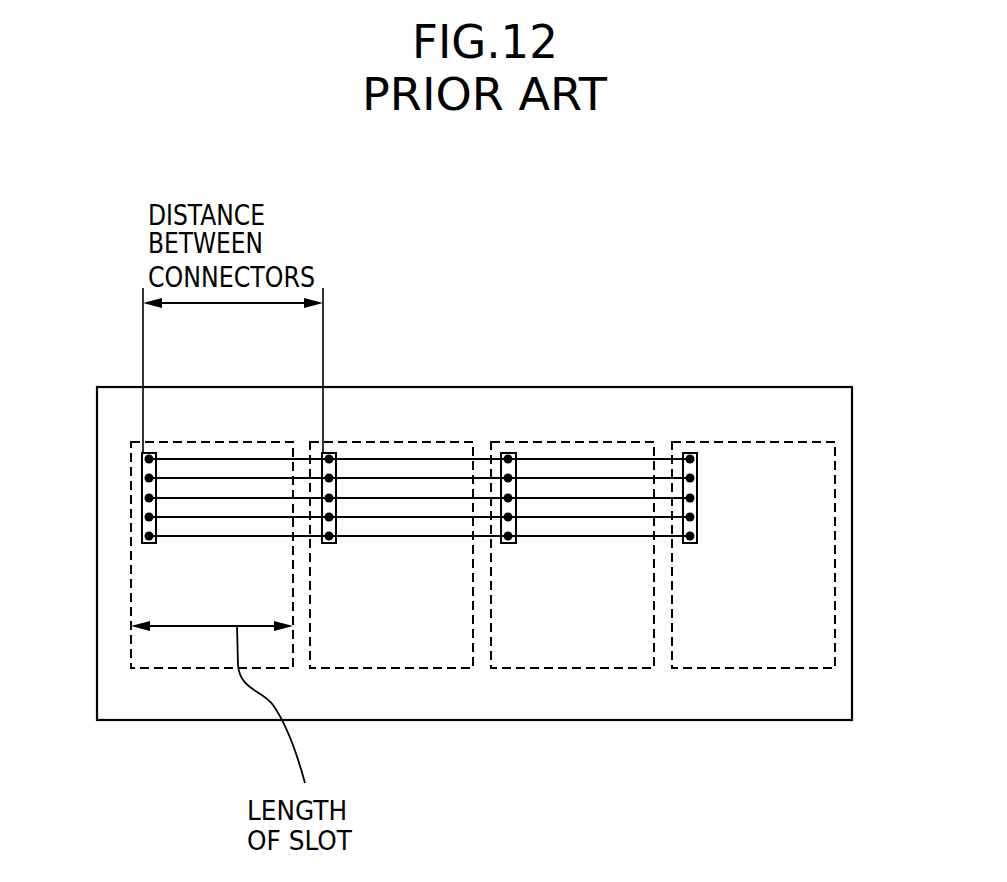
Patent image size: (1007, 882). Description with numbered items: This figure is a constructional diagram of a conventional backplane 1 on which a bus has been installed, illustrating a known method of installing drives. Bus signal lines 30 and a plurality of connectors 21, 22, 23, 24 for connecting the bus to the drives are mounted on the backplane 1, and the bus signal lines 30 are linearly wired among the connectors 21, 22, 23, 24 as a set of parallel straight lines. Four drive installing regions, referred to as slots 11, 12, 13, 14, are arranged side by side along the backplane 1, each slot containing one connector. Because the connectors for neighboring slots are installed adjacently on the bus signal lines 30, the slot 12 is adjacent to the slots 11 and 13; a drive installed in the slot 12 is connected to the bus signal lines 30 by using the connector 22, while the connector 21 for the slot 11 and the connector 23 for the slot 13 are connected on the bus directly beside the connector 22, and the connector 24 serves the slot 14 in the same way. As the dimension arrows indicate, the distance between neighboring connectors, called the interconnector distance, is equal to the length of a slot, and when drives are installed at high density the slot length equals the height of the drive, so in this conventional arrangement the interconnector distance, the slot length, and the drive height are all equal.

The backplane 1 is at (852, 652).
The slot 11 is at (167, 668).
The slot 12 is at (347, 668).
The slot 13 is at (527, 668).
The slot 14 is at (708, 668).
The connector 21 is at (148, 458).
The connector 22 is at (329, 458).
The connector 23 is at (508, 458).
The connector 24 is at (690, 458).
The bus signal lines 30 is at (190, 537).